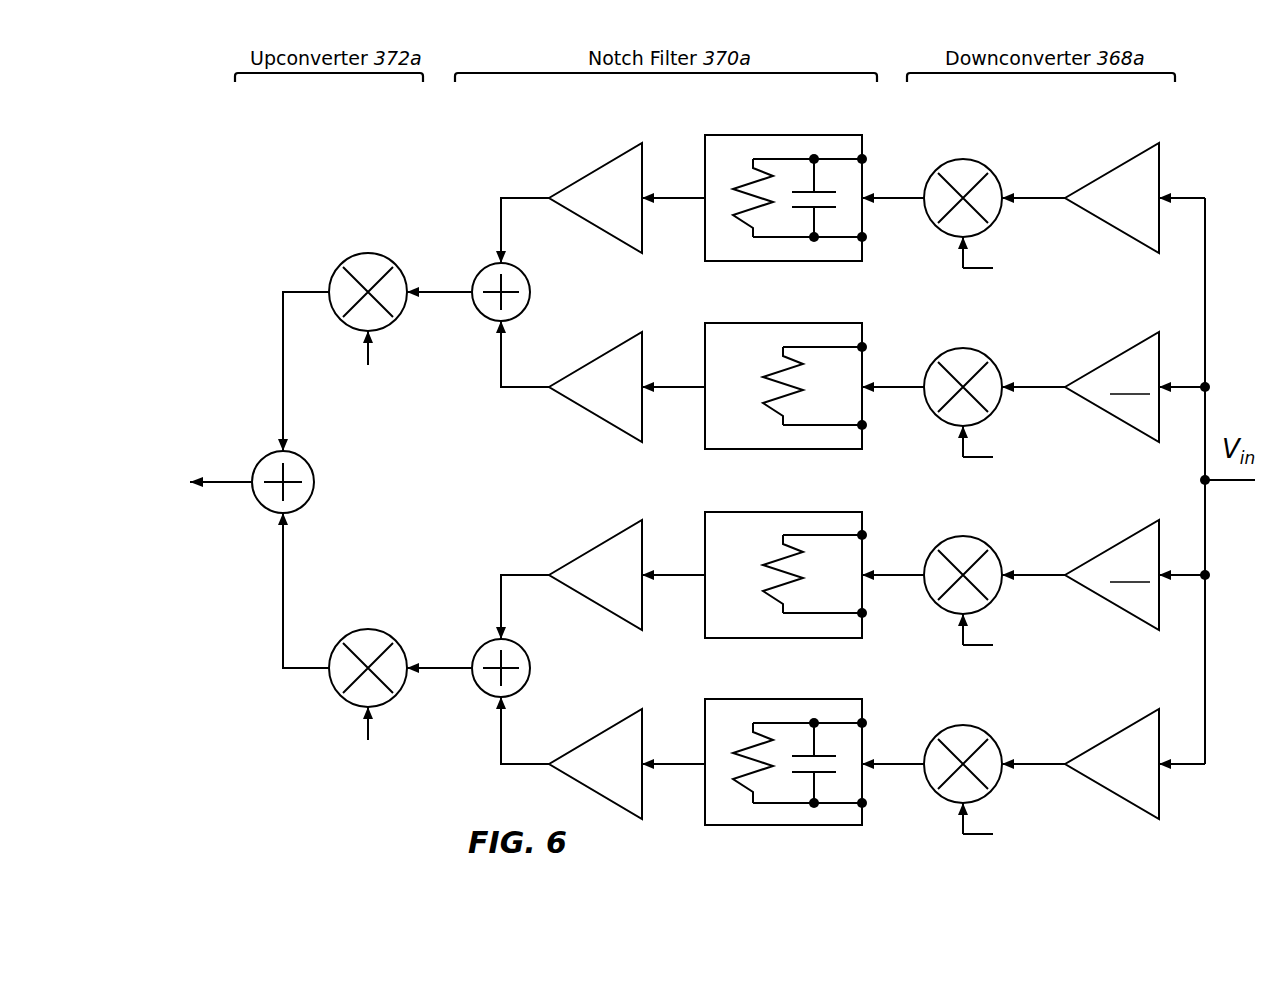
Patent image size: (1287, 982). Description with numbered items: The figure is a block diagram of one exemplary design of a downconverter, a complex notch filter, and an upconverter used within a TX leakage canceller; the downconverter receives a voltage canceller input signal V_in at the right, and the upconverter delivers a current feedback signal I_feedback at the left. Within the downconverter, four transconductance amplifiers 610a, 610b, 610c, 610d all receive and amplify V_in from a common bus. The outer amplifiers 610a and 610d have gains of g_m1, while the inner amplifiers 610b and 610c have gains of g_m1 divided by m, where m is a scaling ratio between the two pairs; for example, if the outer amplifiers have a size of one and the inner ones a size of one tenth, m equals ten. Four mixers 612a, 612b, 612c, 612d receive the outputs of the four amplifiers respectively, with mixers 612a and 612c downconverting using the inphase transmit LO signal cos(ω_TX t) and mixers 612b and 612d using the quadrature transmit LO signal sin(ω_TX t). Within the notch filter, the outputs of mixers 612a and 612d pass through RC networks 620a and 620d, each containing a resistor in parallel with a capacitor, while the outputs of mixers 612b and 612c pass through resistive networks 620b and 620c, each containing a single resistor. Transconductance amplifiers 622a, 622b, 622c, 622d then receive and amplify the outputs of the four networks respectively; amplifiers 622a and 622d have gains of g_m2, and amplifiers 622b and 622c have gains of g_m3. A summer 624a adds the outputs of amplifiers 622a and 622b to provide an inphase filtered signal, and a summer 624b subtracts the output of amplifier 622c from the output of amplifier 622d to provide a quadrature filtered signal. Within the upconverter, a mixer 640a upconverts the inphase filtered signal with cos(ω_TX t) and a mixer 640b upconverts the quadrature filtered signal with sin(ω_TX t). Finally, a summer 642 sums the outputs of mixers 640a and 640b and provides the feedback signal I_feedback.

The transconductance amplifier 610a is at (1114, 170).
The transconductance amplifier 610b is at (1114, 359).
The transconductance amplifier 610c is at (1114, 547).
The transconductance amplifier 610d is at (1114, 736).
The mixer 612a is at (970, 146).
The mixer 612b is at (970, 335).
The mixer 612c is at (970, 523).
The mixer 612d is at (970, 712).
The RC network 620a is at (790, 125).
The resistive network 620b is at (790, 313).
The resistive network 620c is at (790, 501).
The RC network 620d is at (790, 689).
The transconductance amplifier 622a is at (596, 170).
The transconductance amplifier 622b is at (596, 359).
The transconductance amplifier 622c is at (596, 547).
The transconductance amplifier 622d is at (596, 736).
The summer 624a is at (530, 298).
The summer 624b is at (530, 672).
The mixer 640a is at (376, 239).
The mixer 640b is at (376, 615).
The summer 642 is at (314, 479).